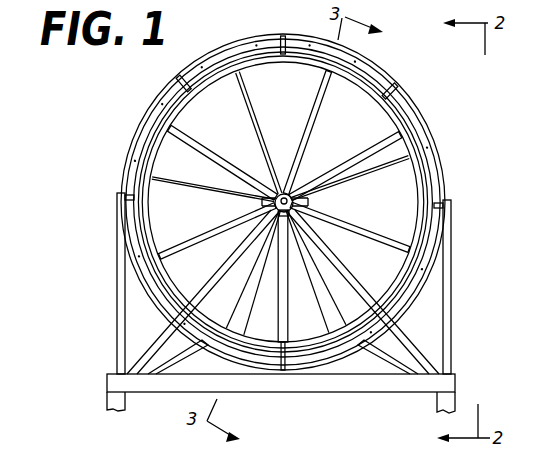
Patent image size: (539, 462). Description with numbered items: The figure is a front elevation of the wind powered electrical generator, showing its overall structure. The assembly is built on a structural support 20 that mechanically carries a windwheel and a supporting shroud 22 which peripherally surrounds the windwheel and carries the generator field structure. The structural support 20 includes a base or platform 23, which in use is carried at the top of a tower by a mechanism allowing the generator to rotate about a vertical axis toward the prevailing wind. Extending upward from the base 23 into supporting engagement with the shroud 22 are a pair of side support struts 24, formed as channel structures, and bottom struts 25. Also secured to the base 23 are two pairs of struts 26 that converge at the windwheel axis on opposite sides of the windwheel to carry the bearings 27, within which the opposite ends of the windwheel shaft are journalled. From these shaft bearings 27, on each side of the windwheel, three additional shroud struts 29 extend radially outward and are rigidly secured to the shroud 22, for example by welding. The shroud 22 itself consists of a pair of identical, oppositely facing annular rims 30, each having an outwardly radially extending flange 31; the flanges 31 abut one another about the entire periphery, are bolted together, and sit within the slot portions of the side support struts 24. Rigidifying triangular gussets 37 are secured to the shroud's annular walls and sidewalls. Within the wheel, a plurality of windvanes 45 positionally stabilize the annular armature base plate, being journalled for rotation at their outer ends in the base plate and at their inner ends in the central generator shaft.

The structural support 20 is at (107, 378).
The supporting shroud 22 is at (426, 113).
The base or platform 23 is at (347, 393).
The side support struts 24 is at (118, 273).
The bottom struts 25 is at (181, 359).
The struts 26 is at (165, 335).
The bearings 27 is at (272, 202).
The shroud struts 29 is at (280, 207).
The annular rims 30 is at (264, 202).
The flange 31 is at (282, 202).
The triangular gussets 37 is at (302, 188).
The windvanes 45 is at (284, 164).